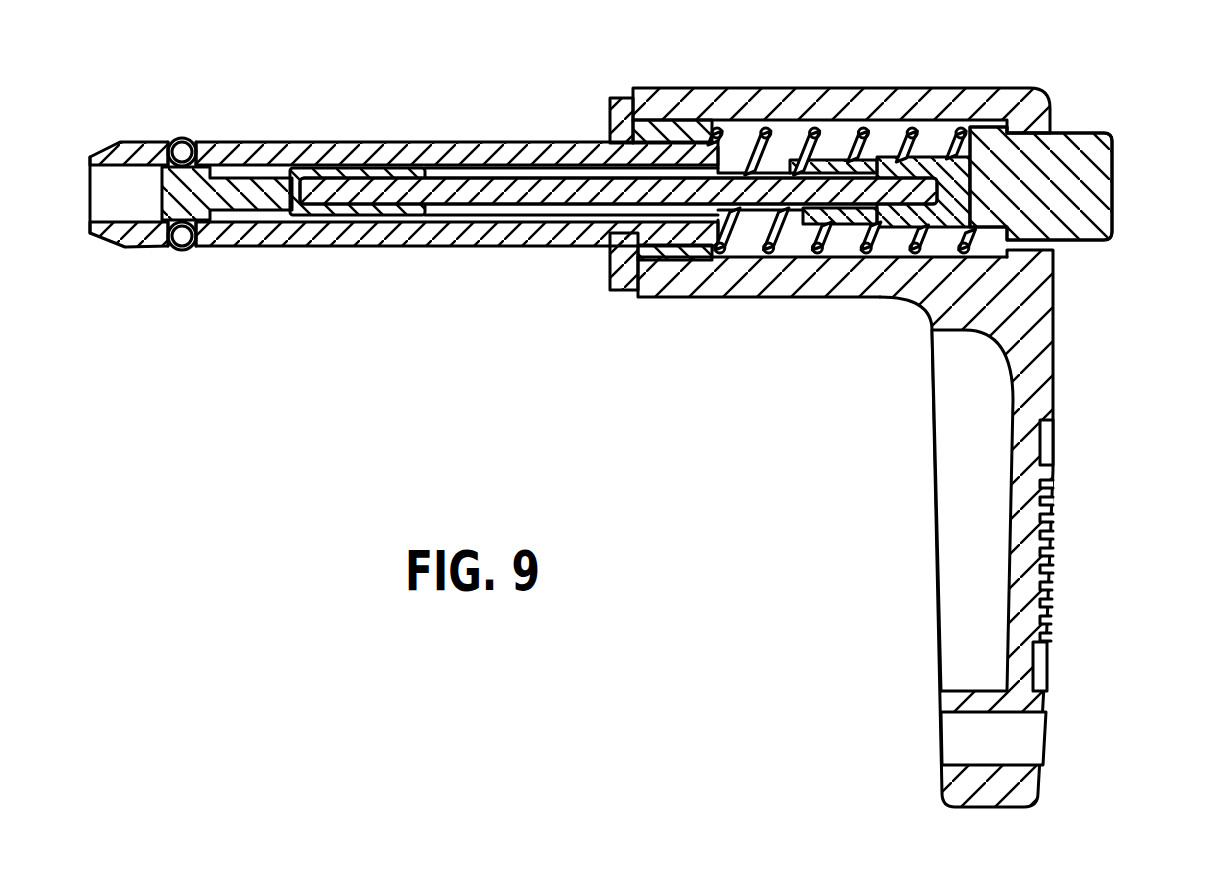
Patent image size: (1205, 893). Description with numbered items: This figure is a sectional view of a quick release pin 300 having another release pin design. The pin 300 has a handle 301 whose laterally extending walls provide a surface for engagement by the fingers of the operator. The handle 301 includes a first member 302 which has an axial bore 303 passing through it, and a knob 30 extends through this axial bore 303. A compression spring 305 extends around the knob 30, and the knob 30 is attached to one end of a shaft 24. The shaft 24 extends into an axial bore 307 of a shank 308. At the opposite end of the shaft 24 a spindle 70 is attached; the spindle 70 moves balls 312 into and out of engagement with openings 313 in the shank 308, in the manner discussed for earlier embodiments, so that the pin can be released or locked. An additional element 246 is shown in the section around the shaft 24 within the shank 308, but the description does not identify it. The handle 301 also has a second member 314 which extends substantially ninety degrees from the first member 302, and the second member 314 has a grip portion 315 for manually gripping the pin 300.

The quick release pin 300 is at (590, 42).
The handle 301 is at (772, 90).
The first member 302 is at (676, 292).
The axial bore 303 is at (738, 130).
The compression spring 305 is at (861, 128).
The axial bore 307 is at (532, 170).
The shank 308 is at (396, 76).
The balls 312 is at (181, 140).
The openings 313 is at (176, 252).
The second member 314 is at (1044, 347).
The grip portion 315 is at (948, 438).
The knob 30 is at (994, 127).
The shaft 24 is at (500, 198).
The sleeve 246 is at (310, 200).
The spindle 70 is at (254, 190).